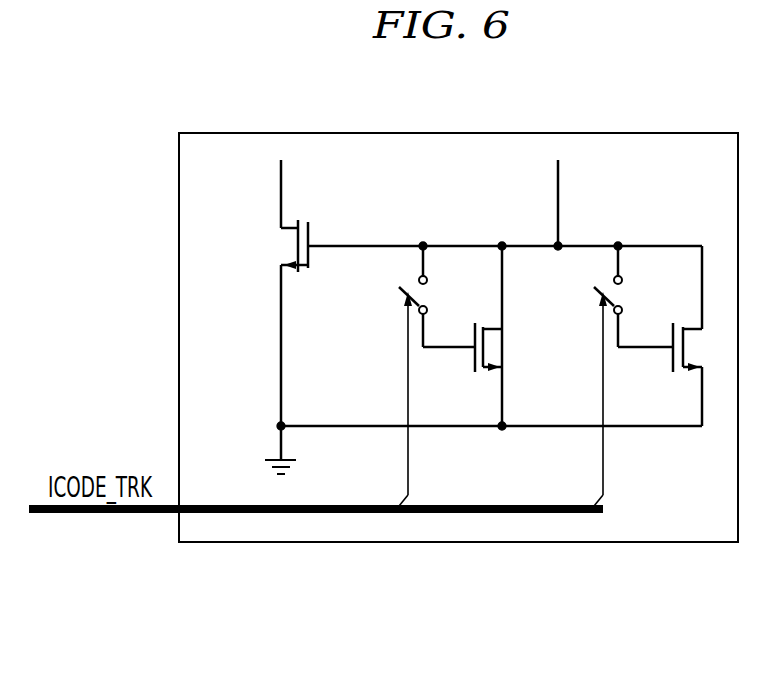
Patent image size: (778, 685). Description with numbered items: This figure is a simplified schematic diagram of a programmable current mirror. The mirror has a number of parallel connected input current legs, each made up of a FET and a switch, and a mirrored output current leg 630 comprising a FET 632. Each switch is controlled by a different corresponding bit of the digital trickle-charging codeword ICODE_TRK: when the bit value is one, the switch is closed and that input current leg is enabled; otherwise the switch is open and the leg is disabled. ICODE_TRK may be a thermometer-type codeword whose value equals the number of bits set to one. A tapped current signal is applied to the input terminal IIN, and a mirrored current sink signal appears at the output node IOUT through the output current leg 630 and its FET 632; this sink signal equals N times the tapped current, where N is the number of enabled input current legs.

The FET 632 is at (310, 232).
The output current leg 630 is at (281, 563).